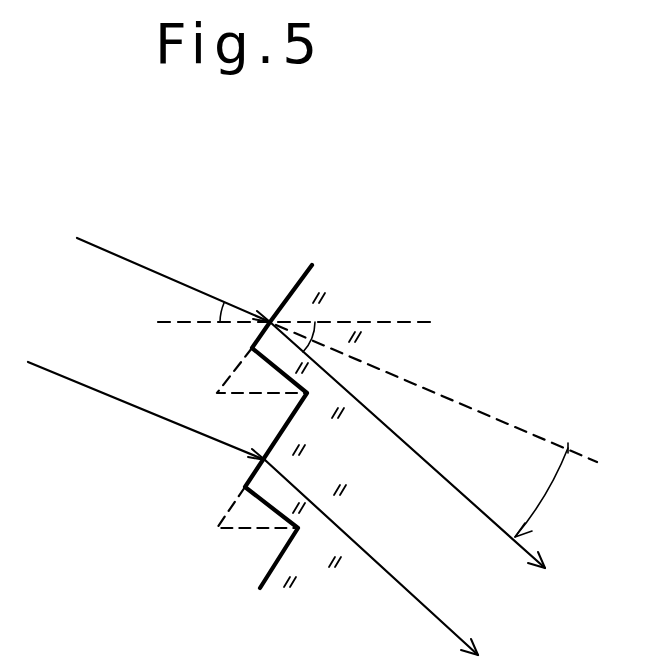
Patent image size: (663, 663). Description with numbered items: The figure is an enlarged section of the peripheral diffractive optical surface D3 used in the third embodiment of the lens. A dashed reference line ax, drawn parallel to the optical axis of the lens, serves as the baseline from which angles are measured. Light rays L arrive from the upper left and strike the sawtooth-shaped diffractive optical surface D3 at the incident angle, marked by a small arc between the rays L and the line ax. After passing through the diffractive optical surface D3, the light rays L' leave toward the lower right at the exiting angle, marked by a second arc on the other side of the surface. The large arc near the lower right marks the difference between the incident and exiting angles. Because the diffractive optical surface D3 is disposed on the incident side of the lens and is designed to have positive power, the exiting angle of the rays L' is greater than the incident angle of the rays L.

The incident light rays L is at (149, 304).
The exiting light rays L' is at (405, 488).
The diffractive optical surface D3 is at (277, 312).
The line parallel to the optical axis ax is at (407, 319).